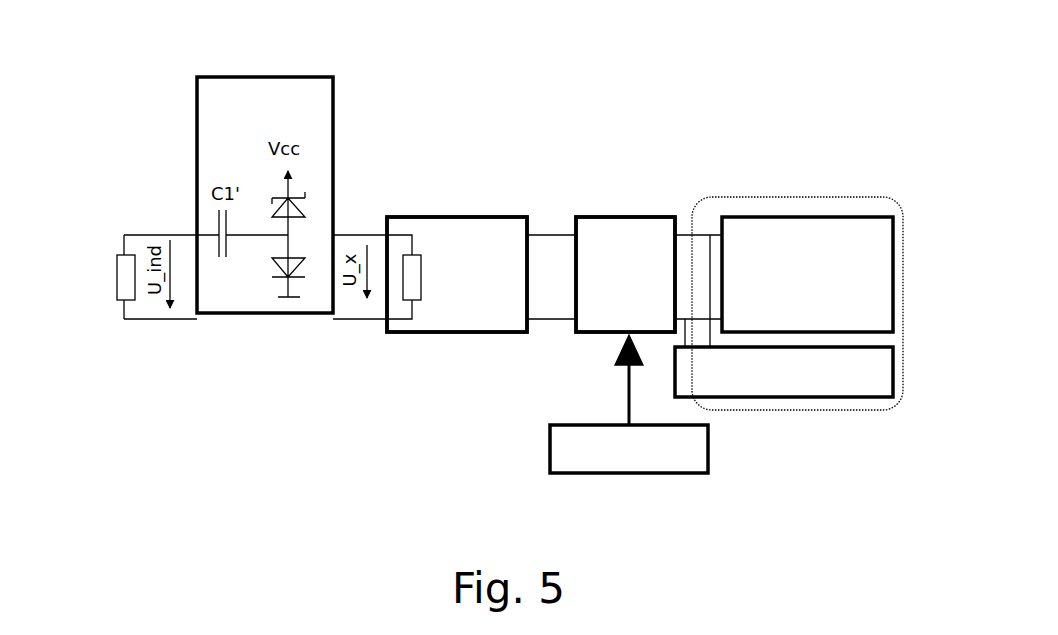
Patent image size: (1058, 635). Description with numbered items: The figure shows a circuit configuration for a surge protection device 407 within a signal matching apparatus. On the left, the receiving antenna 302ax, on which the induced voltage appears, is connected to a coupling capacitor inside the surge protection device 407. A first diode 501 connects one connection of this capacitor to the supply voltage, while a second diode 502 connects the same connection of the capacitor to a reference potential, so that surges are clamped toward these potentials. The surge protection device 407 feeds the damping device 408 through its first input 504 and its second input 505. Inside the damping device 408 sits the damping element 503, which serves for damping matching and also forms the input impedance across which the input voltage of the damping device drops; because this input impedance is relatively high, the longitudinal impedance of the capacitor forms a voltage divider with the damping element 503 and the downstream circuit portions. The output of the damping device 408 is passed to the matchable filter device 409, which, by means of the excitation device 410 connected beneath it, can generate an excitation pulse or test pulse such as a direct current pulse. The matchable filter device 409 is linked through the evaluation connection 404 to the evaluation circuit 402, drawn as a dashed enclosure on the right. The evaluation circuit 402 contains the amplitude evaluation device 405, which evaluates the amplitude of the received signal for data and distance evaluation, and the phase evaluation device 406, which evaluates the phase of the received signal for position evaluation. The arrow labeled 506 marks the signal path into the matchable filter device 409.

The receiving antenna 302ax is at (118, 270).
The surge protection device 407 is at (333, 117).
The first diode 501 is at (302, 198).
The second diode 502 is at (275, 277).
The first input of the damping device 504 is at (390, 235).
The damping device 408 is at (475, 225).
The second input of the damping device 505 is at (398, 319).
The damping element 503 is at (422, 278).
The matchable filter device 409 is at (625, 274).
The converter unit 506 is at (576, 184).
The evaluation connection 404 is at (689, 186).
The evaluation circuit 402 is at (817, 202).
The amplitude evaluation device 405 is at (807, 274).
The phase evaluation device 406 is at (784, 372).
The excitation device 410 is at (629, 404).